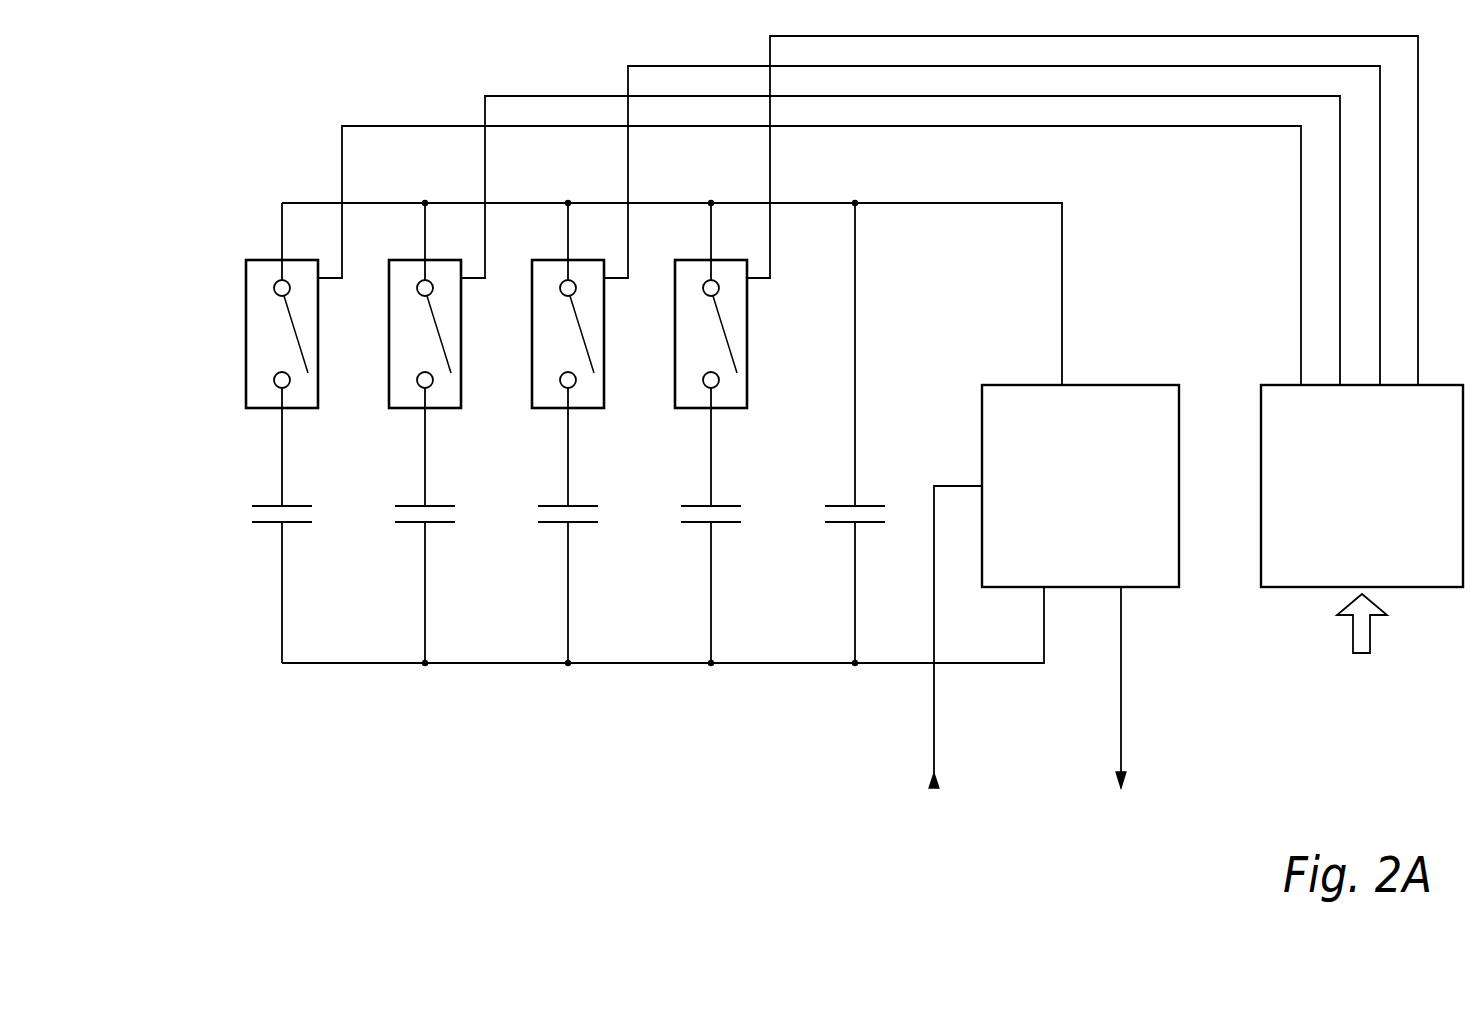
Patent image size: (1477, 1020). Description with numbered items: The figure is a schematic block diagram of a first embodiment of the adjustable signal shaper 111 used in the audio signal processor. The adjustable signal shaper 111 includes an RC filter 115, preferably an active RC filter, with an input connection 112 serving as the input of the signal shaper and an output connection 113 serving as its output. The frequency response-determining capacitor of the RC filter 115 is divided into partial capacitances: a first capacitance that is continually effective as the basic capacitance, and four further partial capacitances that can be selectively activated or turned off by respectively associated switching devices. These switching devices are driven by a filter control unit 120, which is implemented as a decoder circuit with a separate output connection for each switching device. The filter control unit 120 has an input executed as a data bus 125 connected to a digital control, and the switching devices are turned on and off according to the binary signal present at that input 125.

The adjustable signal shaper 111 is at (192, 412).
The input connection 112 is at (946, 655).
The output connection 113 is at (1119, 705).
The RC filter 115 is at (1062, 452).
The filter control unit 120 is at (1342, 452).
The data bus 125 is at (1362, 642).